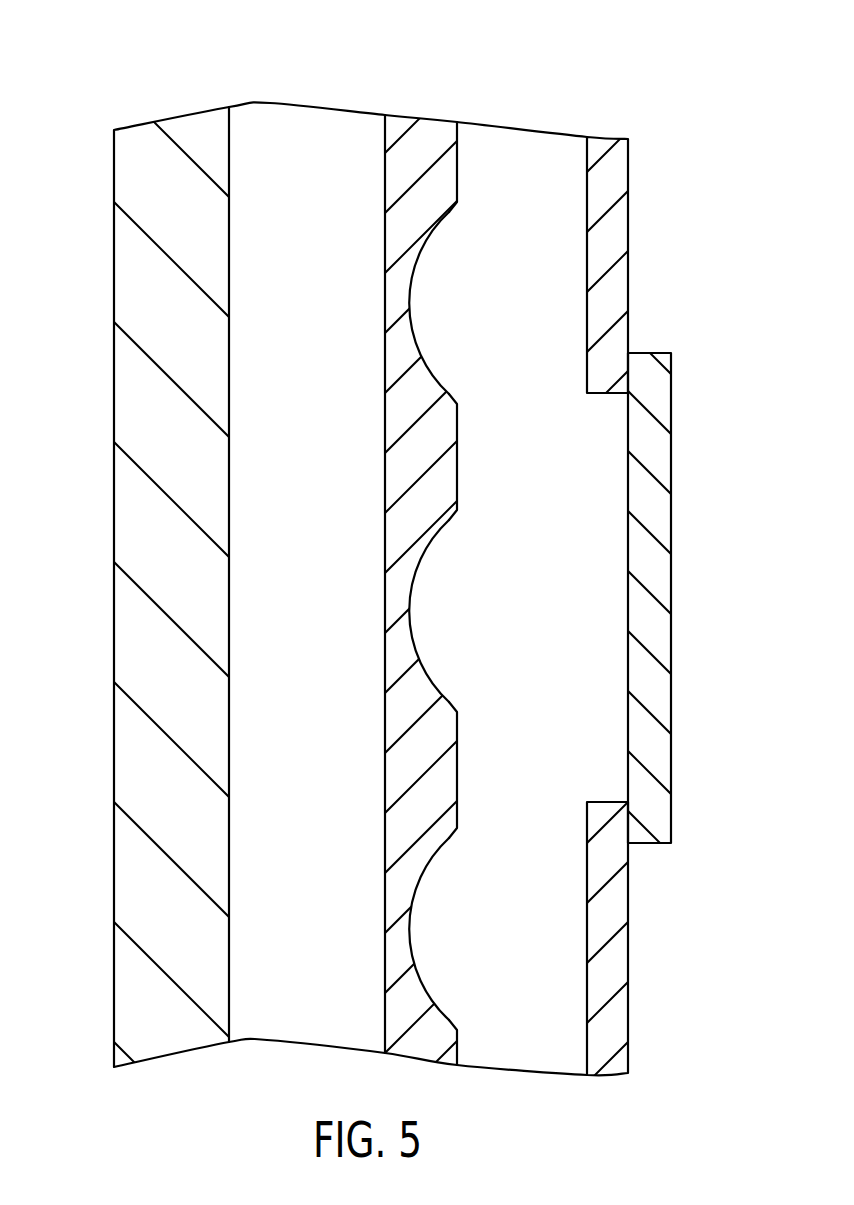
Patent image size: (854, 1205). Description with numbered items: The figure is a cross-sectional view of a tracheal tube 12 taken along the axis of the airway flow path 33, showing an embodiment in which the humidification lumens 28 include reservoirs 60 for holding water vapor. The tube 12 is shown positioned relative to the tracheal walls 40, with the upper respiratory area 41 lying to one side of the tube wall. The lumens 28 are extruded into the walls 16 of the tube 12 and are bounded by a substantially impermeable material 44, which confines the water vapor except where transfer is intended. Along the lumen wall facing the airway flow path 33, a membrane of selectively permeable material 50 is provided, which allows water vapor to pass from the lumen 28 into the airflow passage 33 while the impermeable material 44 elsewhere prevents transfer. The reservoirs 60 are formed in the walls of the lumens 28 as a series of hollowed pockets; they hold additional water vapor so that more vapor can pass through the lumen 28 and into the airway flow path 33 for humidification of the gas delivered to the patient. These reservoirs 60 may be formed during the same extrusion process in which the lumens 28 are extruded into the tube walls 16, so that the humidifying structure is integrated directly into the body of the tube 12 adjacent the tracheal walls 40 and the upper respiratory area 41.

The tube 12 is at (332, 64).
The walls 16 is at (346, 463).
The lumens 28 is at (540, 699).
The airway flow path 33 is at (751, 611).
The tracheal walls 40 is at (128, 488).
The upper respiratory area 41 is at (318, 618).
The substantially impermeable material 44 is at (613, 233).
The selectively permeable material 50 is at (657, 455).
The reservoirs 60 is at (409, 302).